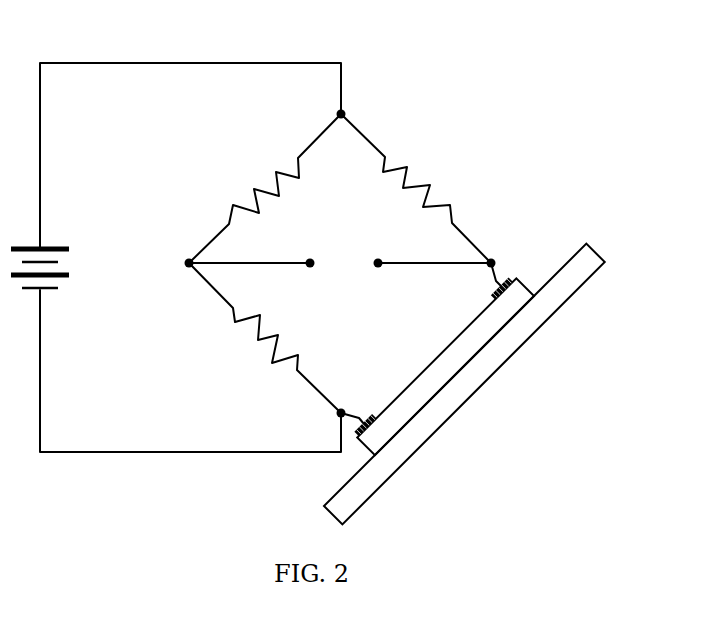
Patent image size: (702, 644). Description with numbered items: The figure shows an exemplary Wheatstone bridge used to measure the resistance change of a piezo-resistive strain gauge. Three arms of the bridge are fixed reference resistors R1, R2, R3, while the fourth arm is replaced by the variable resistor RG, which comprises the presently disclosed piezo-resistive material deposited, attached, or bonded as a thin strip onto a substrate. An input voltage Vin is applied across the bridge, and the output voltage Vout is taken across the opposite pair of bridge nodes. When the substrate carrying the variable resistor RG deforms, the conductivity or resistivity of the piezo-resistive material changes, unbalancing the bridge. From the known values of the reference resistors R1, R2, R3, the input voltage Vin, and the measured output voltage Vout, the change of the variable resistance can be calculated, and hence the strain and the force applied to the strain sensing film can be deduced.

The reference resistor R1 is at (265, 188).
The reference resistor R2 is at (416, 188).
The reference resistor R3 is at (265, 338).
The variable resistor RG is at (453, 373).
The input voltage Vin is at (56, 263).
The output voltage Vout is at (345, 252).